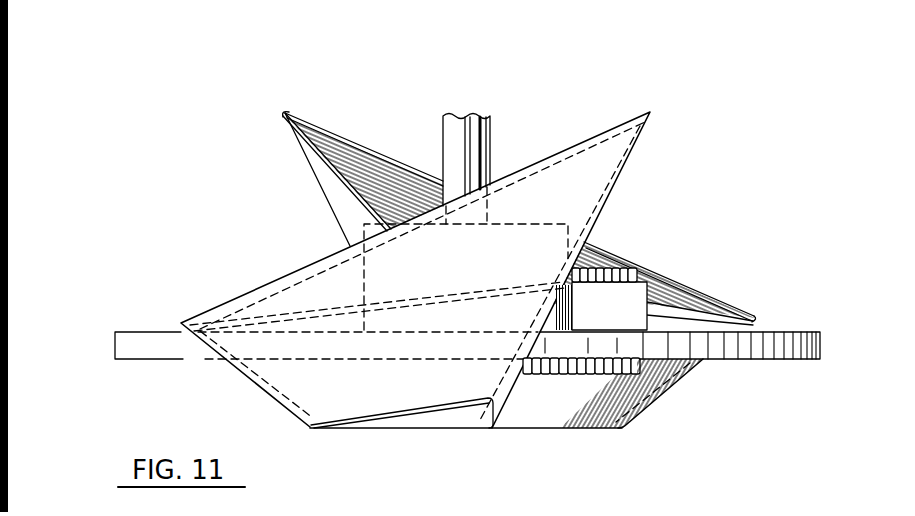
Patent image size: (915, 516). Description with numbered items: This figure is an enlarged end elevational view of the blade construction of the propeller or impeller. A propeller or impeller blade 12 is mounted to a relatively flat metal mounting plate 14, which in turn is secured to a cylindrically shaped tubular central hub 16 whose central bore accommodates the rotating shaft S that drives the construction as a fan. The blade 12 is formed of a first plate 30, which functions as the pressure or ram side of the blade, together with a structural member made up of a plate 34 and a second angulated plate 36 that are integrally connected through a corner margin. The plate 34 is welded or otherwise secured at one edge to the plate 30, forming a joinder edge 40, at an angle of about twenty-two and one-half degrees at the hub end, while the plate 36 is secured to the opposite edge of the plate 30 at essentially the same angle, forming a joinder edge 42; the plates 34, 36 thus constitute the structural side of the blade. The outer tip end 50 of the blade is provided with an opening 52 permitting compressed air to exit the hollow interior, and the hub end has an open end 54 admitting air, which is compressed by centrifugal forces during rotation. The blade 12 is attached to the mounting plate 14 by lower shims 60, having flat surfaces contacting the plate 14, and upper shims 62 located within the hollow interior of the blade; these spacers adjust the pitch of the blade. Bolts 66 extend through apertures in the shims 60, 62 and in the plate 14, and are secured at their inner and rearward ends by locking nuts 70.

The propeller or impeller blade 12 is at (290, 145).
The mounting plate 14 is at (798, 332).
The central hub 16 is at (563, 300).
The first plate 30 is at (553, 176).
The plate 34 is at (357, 431).
The second angulated plate 36 is at (333, 188).
The joinder edge 40 is at (244, 372).
The joinder edge 42 is at (284, 112).
The tip end 50 is at (397, 413).
The opening 52 is at (460, 415).
The open end 54 is at (373, 167).
The lower shim 60 is at (590, 317).
The upper shim 62 is at (633, 303).
The bolt 66 is at (578, 376).
The locking nut 70 is at (606, 272).
The shaft S is at (472, 117).